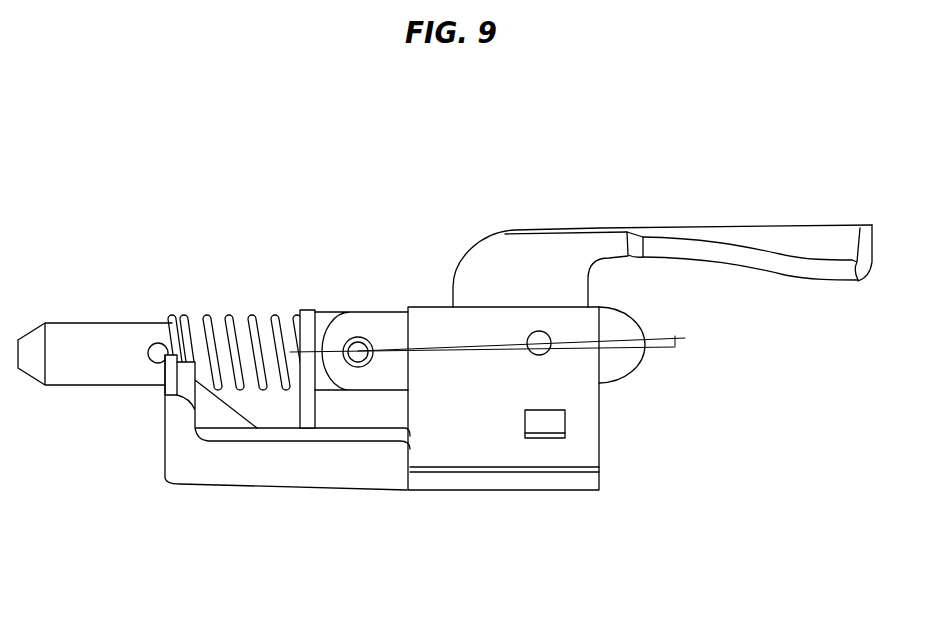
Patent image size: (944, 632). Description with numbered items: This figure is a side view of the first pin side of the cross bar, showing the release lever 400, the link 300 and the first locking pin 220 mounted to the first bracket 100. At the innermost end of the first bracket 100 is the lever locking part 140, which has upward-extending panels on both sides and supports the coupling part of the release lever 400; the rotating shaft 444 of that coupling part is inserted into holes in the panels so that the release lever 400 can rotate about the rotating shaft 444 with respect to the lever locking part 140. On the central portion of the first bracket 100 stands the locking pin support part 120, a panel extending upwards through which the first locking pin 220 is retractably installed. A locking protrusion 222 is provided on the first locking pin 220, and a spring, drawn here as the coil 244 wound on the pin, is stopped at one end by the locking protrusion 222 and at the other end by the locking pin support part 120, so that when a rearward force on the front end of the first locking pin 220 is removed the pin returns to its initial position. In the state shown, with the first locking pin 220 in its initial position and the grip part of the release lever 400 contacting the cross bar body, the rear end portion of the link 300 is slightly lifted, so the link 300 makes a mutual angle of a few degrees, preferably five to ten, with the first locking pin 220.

The first bracket 100 is at (362, 500).
The locking pin support part 120 is at (304, 440).
The lever locking part 140 is at (497, 440).
The first locking pin 220 is at (72, 366).
The locking protrusion 222 is at (156, 342).
The coil spring 244 is at (246, 330).
The link 300 is at (370, 328).
The release lever 400 is at (674, 188).
The rotating shaft 444 is at (539, 331).